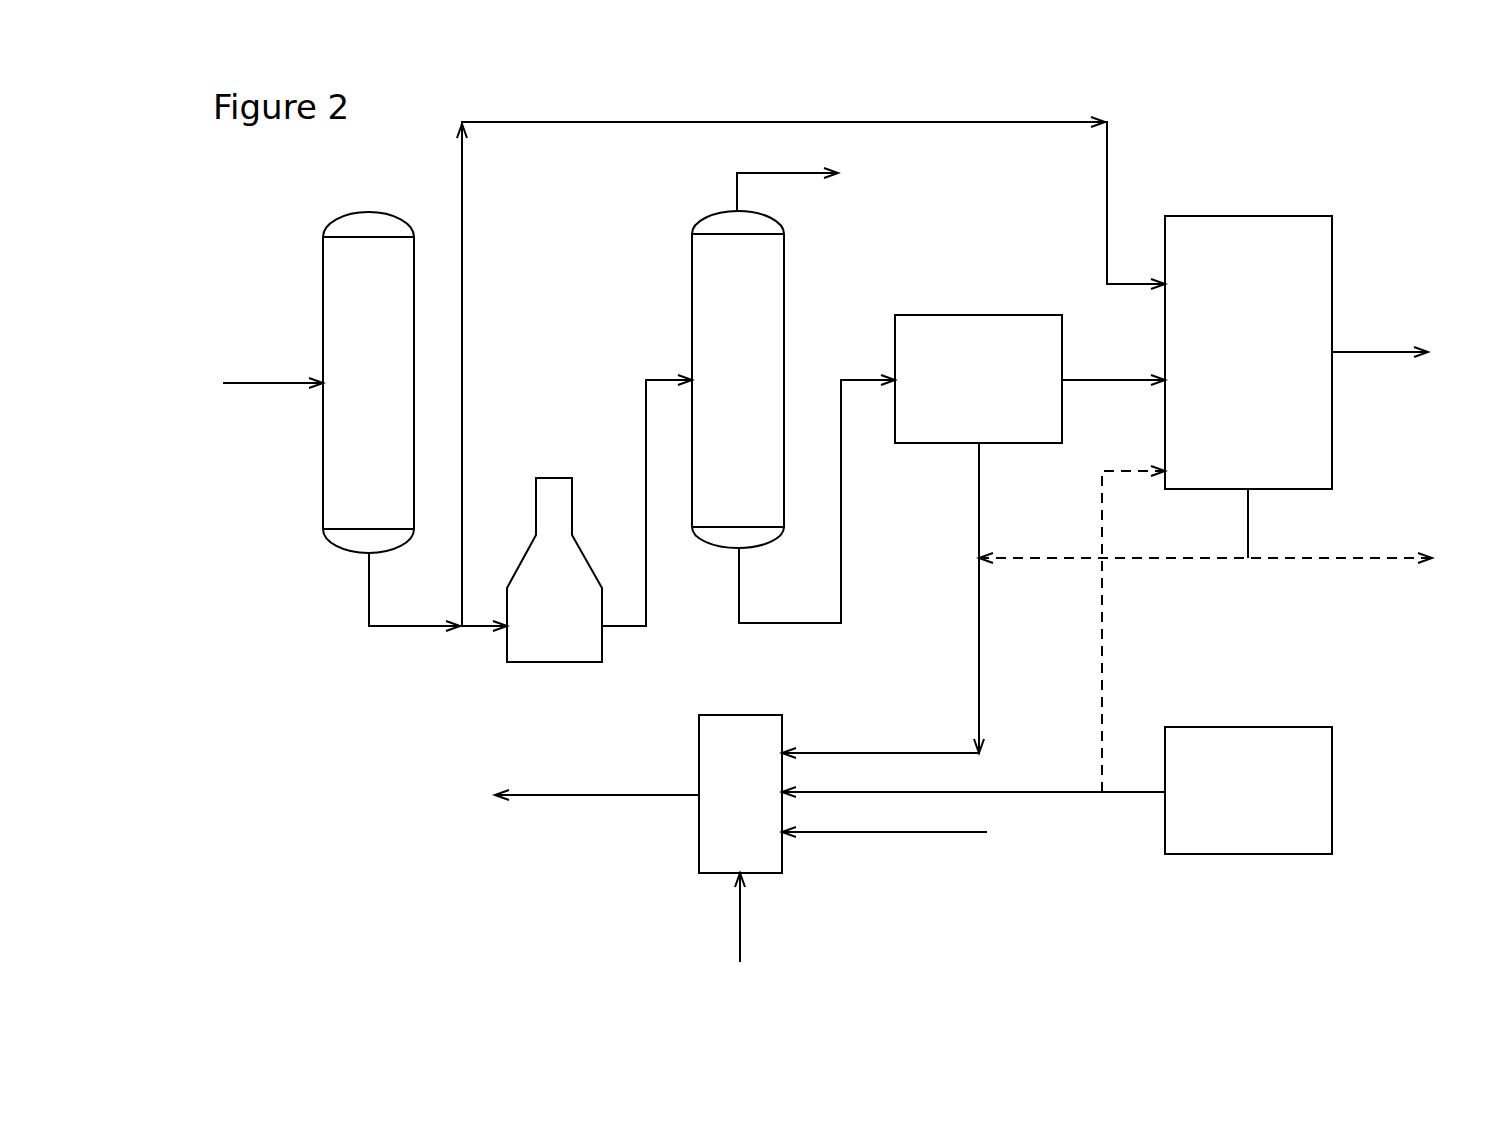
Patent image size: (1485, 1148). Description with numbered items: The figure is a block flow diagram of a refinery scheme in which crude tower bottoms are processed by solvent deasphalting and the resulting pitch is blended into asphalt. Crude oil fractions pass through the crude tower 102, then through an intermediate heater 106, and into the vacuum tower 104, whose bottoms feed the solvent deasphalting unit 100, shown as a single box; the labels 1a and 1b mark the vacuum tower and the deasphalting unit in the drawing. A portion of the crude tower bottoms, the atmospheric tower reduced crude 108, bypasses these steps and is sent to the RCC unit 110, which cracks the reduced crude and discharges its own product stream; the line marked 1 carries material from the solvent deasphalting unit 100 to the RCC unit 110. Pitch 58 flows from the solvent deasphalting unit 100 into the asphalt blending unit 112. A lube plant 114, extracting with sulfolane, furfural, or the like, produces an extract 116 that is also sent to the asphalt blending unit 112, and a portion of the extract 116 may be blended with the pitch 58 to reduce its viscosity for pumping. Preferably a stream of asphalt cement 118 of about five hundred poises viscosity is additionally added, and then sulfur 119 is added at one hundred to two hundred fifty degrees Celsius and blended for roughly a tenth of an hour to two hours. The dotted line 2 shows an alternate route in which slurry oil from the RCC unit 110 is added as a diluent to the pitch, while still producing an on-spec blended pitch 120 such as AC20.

The solvent deasphalting unit 100 is at (978, 379).
The crude tower 102 is at (368, 382).
The vacuum tower 104 is at (738, 379).
The intermediate heater 106 is at (554, 570).
The atmospheric tower reduced crude 108 is at (811, 361).
The RCC unit 110 is at (1248, 352).
The asphalt blending unit 112 is at (740, 794).
The lube plant 114 is at (1248, 790).
The extract 116 is at (973, 783).
The asphalt cement 118 is at (884, 823).
The sulfur 119 is at (758, 917).
The blended pitch 120 is at (597, 785).
The pitch 58 is at (883, 600).
The stage 1a is at (673, 266).
The stage 1b is at (911, 296).
The stream 1 is at (1113, 370).
The dotted line 2 is at (1205, 526).